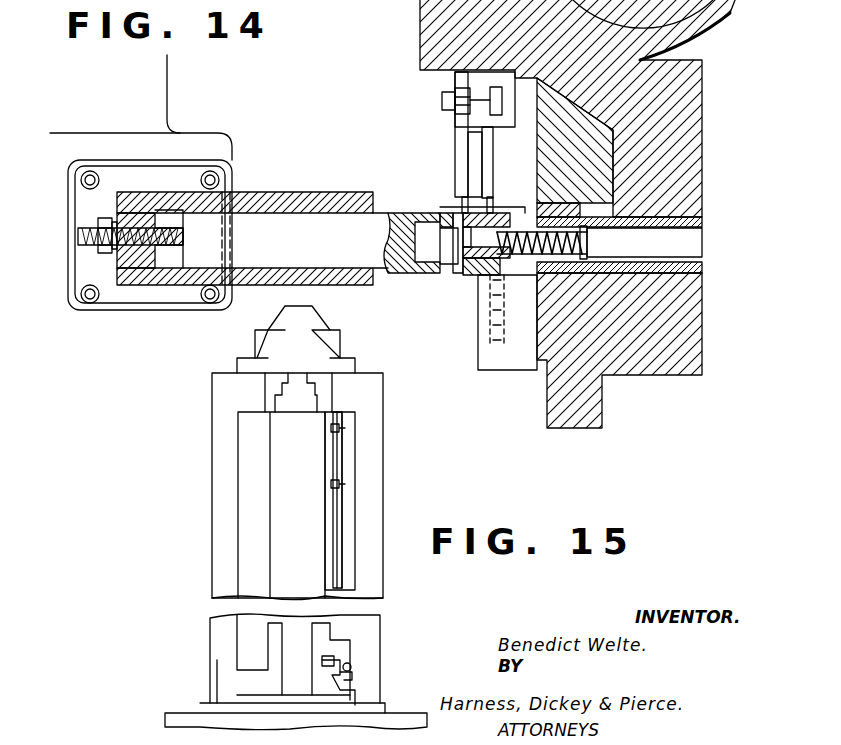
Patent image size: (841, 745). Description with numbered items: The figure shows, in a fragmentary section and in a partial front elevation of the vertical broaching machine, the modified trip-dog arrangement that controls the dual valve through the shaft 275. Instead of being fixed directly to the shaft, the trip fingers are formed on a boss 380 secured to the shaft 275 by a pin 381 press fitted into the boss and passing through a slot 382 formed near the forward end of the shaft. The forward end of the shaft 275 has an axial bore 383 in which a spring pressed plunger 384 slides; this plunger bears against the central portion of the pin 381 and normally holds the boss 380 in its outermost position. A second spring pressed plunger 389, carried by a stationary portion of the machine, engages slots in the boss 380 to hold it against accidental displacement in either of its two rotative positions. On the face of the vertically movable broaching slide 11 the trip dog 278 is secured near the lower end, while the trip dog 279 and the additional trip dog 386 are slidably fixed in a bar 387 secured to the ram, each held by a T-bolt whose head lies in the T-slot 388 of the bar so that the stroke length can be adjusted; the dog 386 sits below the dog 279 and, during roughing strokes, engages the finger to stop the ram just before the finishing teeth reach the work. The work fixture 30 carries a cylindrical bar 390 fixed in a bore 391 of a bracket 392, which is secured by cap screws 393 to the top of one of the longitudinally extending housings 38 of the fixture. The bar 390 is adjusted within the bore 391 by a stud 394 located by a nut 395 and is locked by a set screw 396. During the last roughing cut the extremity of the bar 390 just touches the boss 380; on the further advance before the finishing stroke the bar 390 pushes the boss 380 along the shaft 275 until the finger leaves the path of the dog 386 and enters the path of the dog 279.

In FIG. 14, the broaching slide 11 is at (421, 72).
In FIG. 15, the broaching slide 11 is at (276, 505).
In FIG. 14, the work fixture 30 is at (186, 102).
In FIG. 15, the work fixture 30 is at (258, 654).
In FIG. 14, the longitudinally extending housing 38 is at (102, 133).
In FIG. 14, the shaft 275 is at (698, 232).
In FIG. 14, the trip dog 278 is at (505, 174).
In FIG. 15, the trip dog 278 is at (338, 660).
In FIG. 14, the trip dog 279 is at (476, 162).
In FIG. 15, the trip dog 279 is at (345, 428).
In FIG. 14, the boss 380 is at (532, 213).
In FIG. 14, the pin 381 is at (458, 245).
In FIG. 14, the slot 382 is at (483, 268).
In FIG. 14, the axial bore 383 is at (445, 240).
In FIG. 14, the spring pressed plunger 384 is at (467, 258).
In FIG. 14, the trip dog 386 is at (455, 142).
In FIG. 15, the trip dog 386 is at (345, 484).
In FIG. 14, the bar 387 is at (500, 72).
In FIG. 15, the bar 387 is at (341, 462).
In FIG. 14, the T-slot 388 is at (517, 80).
In FIG. 15, the T-slot 388 is at (338, 442).
In FIG. 14, the spring pressed plunger 389 is at (505, 276).
In FIG. 14, the cylindrical bar 390 is at (398, 220).
In FIG. 14, the bore 391 is at (316, 210).
In FIG. 14, the bracket 392 is at (273, 193).
In FIG. 14, the cap screws 393 is at (210, 172).
In FIG. 14, the stud 394 is at (160, 250).
In FIG. 14, the nut 395 is at (100, 252).
In FIG. 14, the set screw 396 is at (412, 215).